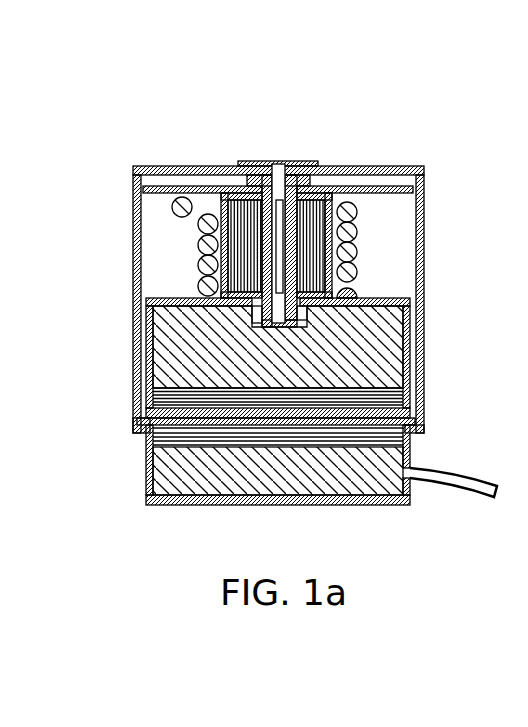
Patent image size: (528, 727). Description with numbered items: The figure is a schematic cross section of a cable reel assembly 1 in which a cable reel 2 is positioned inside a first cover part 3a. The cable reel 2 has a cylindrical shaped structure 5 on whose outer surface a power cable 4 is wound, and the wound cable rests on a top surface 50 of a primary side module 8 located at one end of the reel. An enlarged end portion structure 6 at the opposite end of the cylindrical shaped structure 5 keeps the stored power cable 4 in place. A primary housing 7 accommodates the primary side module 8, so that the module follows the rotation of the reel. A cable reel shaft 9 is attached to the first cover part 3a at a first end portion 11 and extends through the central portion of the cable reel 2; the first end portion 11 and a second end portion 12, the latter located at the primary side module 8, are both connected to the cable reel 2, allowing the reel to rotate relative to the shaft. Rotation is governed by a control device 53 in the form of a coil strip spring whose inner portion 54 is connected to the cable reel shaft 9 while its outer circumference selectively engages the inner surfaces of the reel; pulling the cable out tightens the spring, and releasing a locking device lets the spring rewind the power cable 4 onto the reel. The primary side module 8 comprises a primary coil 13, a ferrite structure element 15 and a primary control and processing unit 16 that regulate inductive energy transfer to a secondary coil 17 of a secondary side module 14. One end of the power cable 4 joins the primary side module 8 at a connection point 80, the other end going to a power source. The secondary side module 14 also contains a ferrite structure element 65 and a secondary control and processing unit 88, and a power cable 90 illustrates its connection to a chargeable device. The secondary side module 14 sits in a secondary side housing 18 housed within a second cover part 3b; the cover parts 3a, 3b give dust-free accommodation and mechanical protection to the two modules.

The cable reel assembly 1 is at (403, 150).
The cable reel 2 is at (372, 258).
The first cover part 3a is at (424, 268).
The second cover part 3b is at (412, 500).
The power cable 4 is at (525, 195).
The cylindrical shaped structure 5 is at (383, 192).
The enlarged end portion structure 6 is at (322, 240).
The primary housing 7 is at (392, 373).
The primary side module 8 is at (405, 323).
The cable reel shaft 9 is at (250, 233).
The first end portion 11 is at (278, 165).
The second end portion 12 is at (260, 322).
The primary coil 13 is at (158, 405).
The secondary side module 14 is at (406, 462).
The ferrite structure element 15 is at (393, 397).
The primary control and processing unit 16 is at (419, 352).
The secondary coil 17 is at (412, 415).
The secondary side housing 18 is at (400, 444).
The top surface 50 is at (167, 298).
The control device 53 is at (357, 228).
The inner portion 54 is at (287, 225).
The ferrite structure element 65 is at (158, 440).
The connection point 80 is at (358, 298).
The secondary control and processing unit 88 is at (163, 474).
The power cable 90 is at (482, 488).